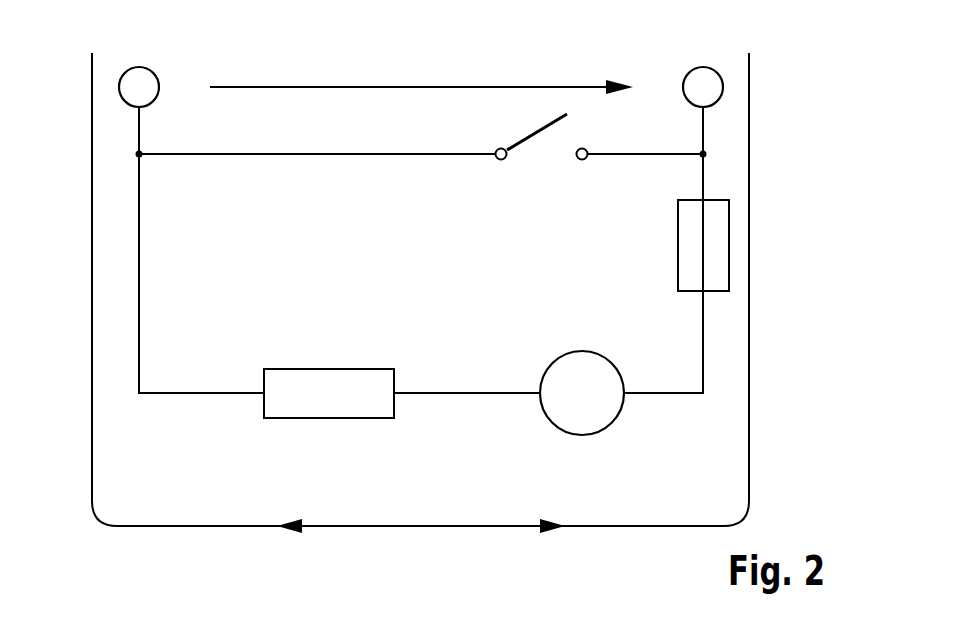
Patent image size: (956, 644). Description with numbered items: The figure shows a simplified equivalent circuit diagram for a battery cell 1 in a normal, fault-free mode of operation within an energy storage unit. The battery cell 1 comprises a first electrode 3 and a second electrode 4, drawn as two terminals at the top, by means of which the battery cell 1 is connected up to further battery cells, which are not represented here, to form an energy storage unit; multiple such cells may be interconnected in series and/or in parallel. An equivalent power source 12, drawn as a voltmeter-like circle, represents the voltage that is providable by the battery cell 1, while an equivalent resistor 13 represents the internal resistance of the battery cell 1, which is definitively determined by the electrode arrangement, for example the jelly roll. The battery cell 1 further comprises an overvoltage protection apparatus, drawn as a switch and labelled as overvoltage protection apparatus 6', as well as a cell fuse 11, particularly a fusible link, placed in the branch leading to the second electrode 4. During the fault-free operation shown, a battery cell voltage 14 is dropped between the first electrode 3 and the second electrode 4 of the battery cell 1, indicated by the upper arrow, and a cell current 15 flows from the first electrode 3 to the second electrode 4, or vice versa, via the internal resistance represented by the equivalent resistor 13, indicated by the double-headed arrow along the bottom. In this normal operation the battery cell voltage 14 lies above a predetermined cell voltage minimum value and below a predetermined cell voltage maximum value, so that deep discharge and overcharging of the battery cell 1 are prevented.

The battery cell 1 is at (112, 227).
The first electrode 3 is at (119, 87).
The second electrode 4 is at (723, 87).
The tripped overvoltage protection apparatus 6' is at (542, 168).
The cell fuse 11 is at (729, 243).
The equivalent power source 12 is at (583, 435).
The equivalent resistor 13 is at (330, 418).
The battery cell voltage 14 is at (421, 85).
The cell current 15 is at (418, 524).